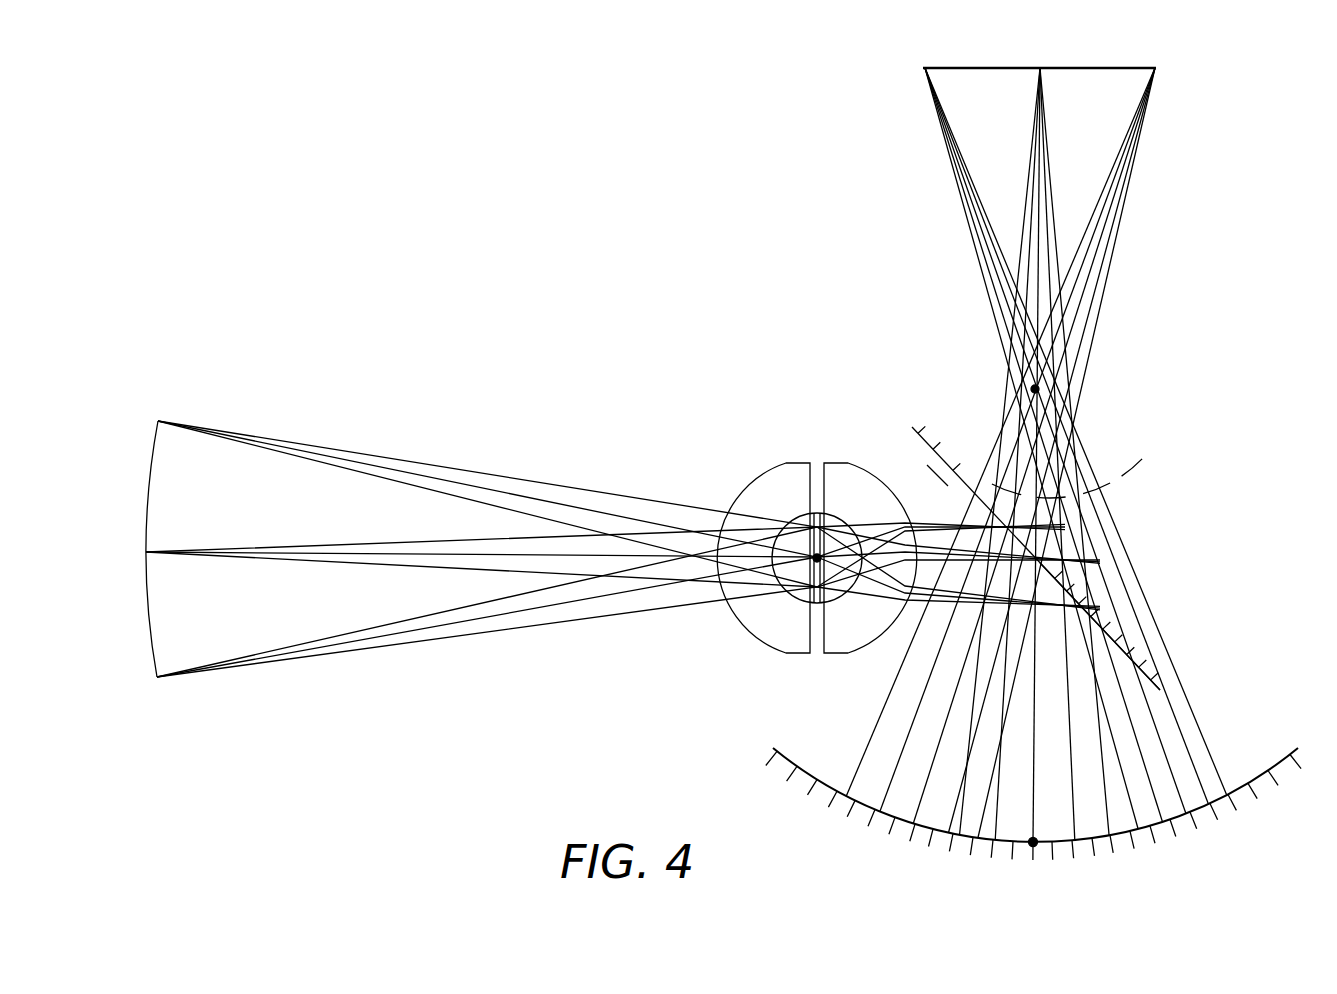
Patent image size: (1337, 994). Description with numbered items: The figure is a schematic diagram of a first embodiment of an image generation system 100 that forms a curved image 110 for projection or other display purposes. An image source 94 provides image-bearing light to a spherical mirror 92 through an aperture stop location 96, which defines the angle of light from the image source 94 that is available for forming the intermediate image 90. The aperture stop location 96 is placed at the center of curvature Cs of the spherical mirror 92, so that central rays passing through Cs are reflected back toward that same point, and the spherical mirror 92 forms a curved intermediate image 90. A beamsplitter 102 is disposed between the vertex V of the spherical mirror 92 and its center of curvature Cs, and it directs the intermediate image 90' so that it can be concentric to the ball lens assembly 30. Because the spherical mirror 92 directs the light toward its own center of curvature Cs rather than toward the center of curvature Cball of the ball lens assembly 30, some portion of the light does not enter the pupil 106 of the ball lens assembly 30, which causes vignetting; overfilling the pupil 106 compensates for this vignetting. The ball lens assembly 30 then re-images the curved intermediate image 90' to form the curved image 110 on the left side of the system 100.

The image generation system 100 is at (528, 288).
The image source 94 is at (958, 68).
The curved image 110 is at (150, 488).
The ball lens assembly 30 is at (797, 462).
The pupil 106 is at (812, 600).
The center of curvature of ball lens assembly Cball is at (815, 553).
The intermediate image 90 is at (1036, 534).
The intermediate image 90' is at (900, 458).
The beamsplitter 102 is at (1133, 657).
The center of curvature of spherical mirror Cs is at (1035, 389).
The aperture stop location 96 is at (1076, 432).
The spherical mirror 92 is at (1277, 768).
The vertex of spherical mirror V is at (1033, 846).